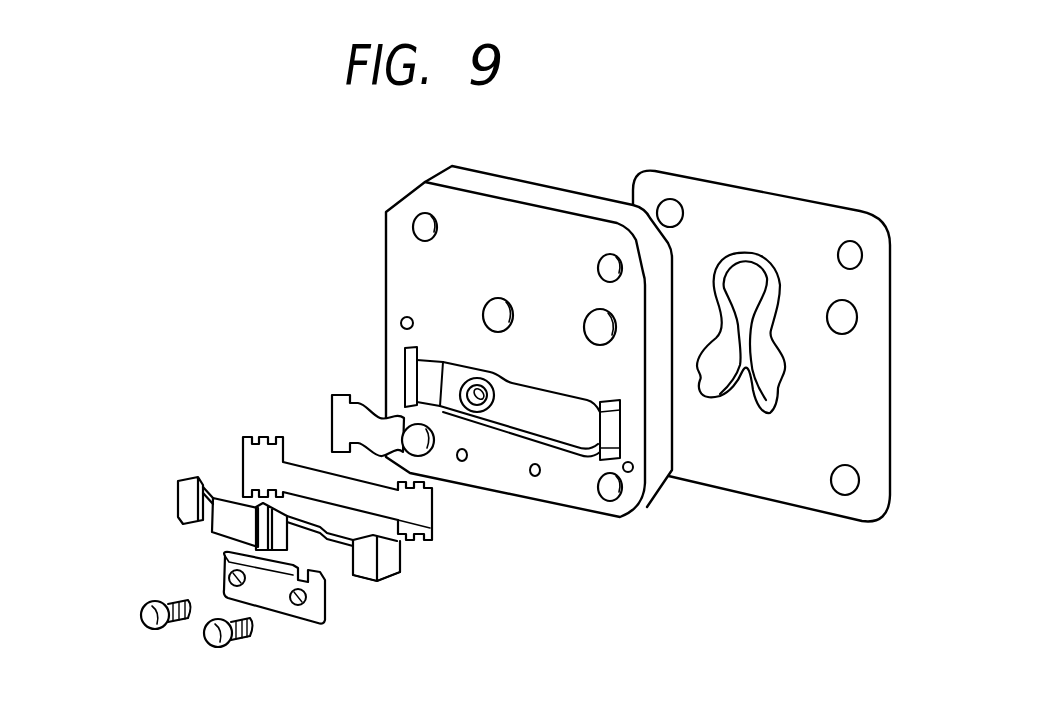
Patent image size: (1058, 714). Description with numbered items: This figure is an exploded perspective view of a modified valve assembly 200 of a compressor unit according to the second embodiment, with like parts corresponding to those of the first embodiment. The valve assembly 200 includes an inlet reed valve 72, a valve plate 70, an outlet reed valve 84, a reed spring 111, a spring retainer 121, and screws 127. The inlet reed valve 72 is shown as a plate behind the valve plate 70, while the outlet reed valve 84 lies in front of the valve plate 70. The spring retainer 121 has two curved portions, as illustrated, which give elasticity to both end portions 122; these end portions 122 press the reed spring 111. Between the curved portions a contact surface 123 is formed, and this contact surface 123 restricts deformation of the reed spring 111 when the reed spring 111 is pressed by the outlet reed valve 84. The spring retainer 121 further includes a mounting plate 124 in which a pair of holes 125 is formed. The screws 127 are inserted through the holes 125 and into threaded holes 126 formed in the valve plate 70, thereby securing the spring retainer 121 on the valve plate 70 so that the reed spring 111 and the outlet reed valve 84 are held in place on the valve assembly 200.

The valve plate 70 is at (510, 188).
The inlet reed valve 72 is at (755, 205).
The outlet reed valve 84 is at (353, 420).
The reed spring 111 is at (415, 513).
The spring retainer 121 is at (368, 590).
The end portions 122 is at (193, 480).
The contact surface 123 is at (283, 508).
The mounting plate 124 is at (323, 607).
The holes 125 is at (288, 598).
The threaded holes 126 is at (535, 477).
The screws 127 is at (203, 641).
The valve assembly 200 is at (638, 519).